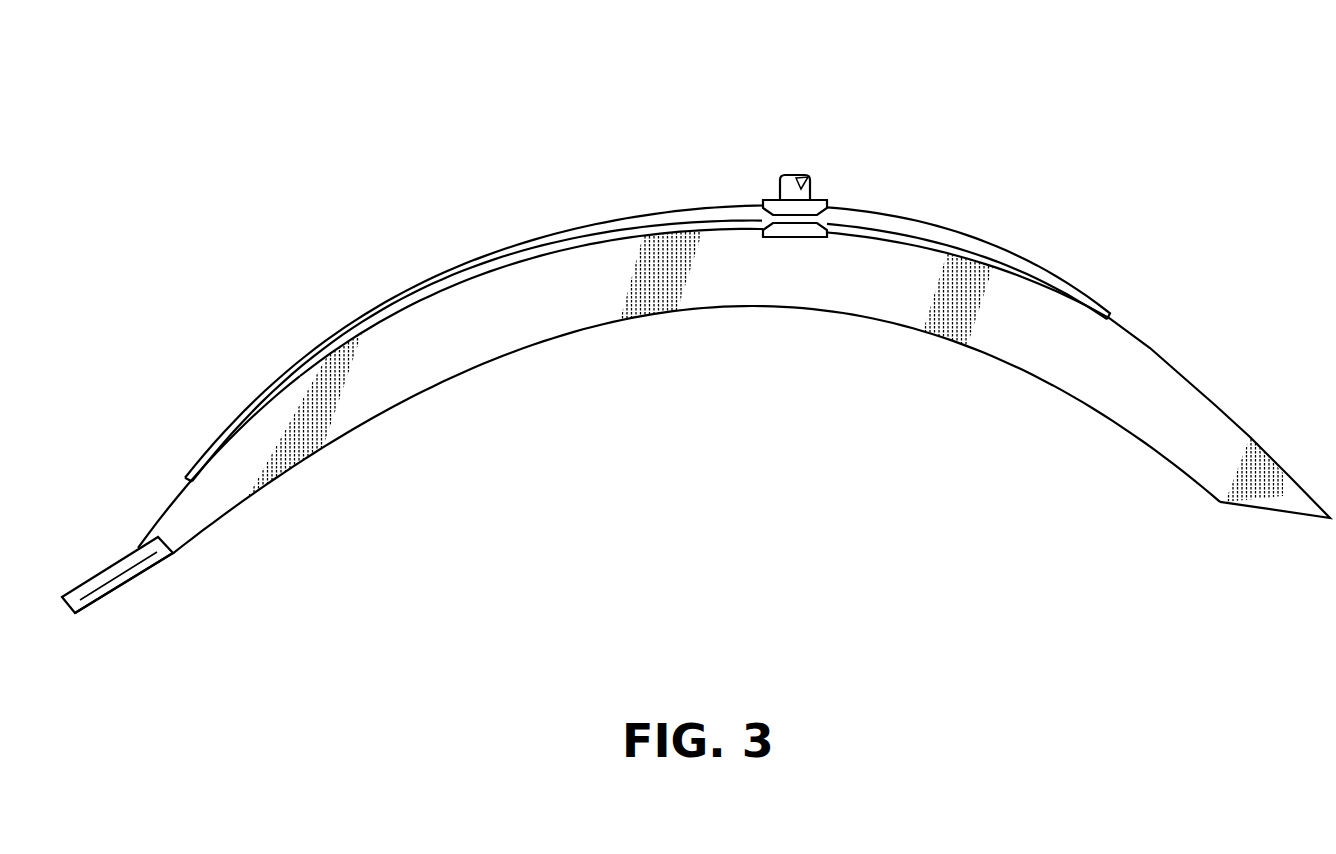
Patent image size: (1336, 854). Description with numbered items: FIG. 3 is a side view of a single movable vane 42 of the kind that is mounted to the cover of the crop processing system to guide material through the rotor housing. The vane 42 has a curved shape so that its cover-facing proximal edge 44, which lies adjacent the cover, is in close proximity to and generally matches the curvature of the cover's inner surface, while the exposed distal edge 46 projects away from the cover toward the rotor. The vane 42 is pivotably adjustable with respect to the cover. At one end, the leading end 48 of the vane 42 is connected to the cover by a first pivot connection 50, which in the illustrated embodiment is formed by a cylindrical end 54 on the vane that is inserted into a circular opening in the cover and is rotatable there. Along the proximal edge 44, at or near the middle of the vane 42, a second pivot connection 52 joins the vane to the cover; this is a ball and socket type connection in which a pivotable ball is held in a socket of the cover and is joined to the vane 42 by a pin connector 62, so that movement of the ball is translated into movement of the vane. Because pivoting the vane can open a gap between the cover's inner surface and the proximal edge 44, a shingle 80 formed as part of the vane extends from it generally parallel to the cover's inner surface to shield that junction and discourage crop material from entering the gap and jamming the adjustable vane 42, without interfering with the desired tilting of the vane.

The vane 42 is at (525, 347).
The cover-facing proximal edge 44 is at (977, 241).
The exposed distal edge 46 is at (818, 310).
The leading end 48 is at (172, 503).
The first pivot connection 50 is at (93, 608).
The second pivot connection 52 is at (789, 171).
The cylindrical end 54 is at (117, 590).
The pin connector 62 is at (824, 209).
The shingle 80 is at (503, 249).